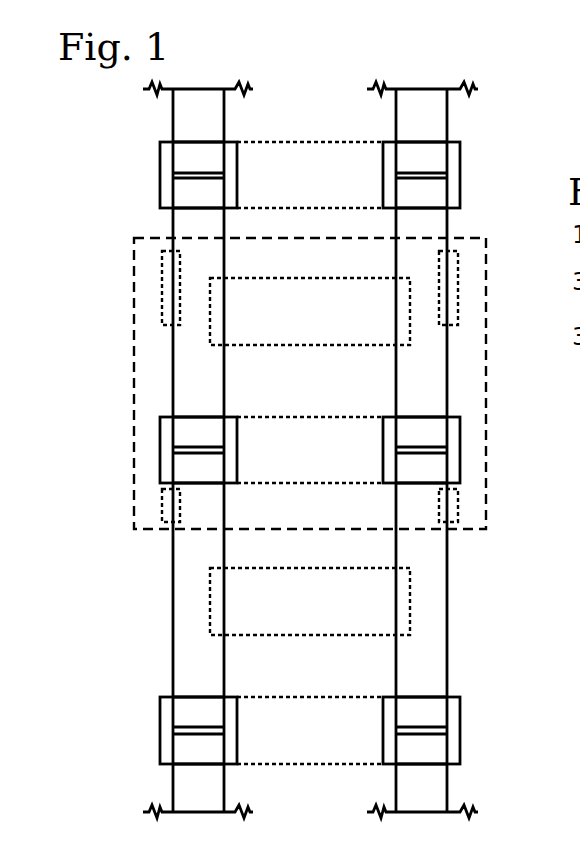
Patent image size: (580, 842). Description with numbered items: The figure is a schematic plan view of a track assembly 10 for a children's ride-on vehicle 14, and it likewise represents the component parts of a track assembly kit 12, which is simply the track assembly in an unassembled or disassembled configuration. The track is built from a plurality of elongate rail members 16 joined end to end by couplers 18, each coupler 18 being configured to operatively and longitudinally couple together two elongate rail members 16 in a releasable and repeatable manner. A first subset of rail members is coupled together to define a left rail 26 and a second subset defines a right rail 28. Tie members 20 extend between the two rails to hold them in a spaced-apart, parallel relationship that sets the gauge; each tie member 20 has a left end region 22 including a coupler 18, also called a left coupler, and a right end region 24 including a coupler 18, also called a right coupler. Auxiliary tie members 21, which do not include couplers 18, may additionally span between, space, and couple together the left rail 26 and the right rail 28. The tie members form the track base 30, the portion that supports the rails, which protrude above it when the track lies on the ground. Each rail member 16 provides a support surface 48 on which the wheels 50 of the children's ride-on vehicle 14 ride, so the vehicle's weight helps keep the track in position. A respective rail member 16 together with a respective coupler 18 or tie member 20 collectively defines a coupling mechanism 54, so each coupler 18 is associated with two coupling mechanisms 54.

The track assembly 10 is at (515, 82).
The track assembly kit 12 is at (554, 111).
The children's ride-on vehicle 14 is at (489, 279).
The elongate rail member 16 is at (170, 130).
The coupler 18 is at (158, 177).
The tie member 20 is at (331, 139).
The auxiliary tie member 21 is at (334, 276).
The left end region 22 is at (196, 142).
The right end region 24 is at (420, 142).
The left rail 26 is at (201, 84).
The right rail 28 is at (421, 84).
The track base 30 is at (272, 142).
The support surface 48 is at (187, 267).
The wheel 50 is at (162, 305).
The coupling mechanism 54 is at (212, 169).